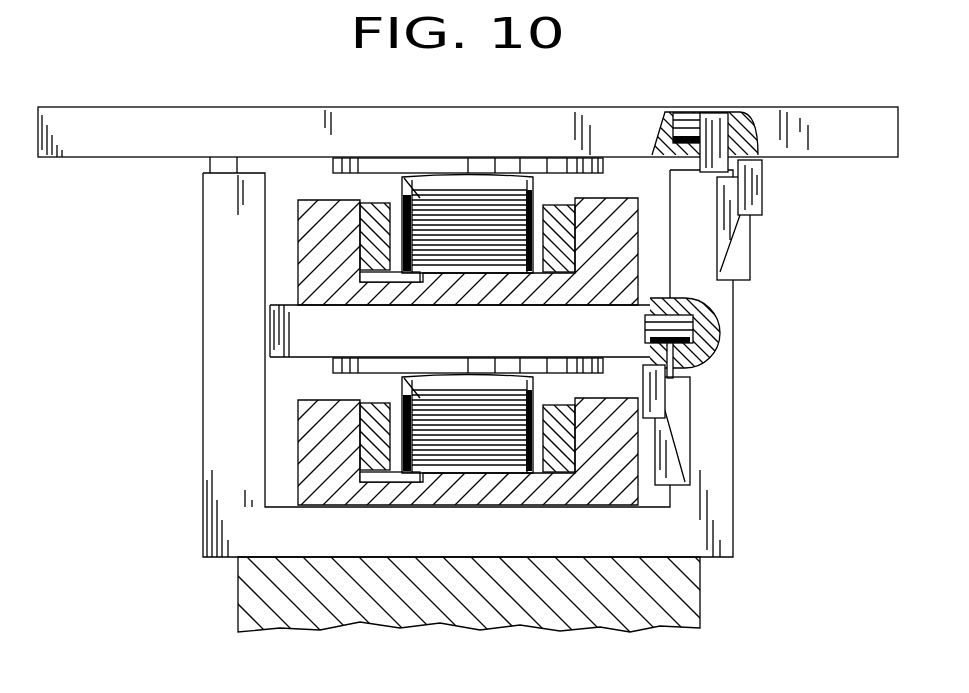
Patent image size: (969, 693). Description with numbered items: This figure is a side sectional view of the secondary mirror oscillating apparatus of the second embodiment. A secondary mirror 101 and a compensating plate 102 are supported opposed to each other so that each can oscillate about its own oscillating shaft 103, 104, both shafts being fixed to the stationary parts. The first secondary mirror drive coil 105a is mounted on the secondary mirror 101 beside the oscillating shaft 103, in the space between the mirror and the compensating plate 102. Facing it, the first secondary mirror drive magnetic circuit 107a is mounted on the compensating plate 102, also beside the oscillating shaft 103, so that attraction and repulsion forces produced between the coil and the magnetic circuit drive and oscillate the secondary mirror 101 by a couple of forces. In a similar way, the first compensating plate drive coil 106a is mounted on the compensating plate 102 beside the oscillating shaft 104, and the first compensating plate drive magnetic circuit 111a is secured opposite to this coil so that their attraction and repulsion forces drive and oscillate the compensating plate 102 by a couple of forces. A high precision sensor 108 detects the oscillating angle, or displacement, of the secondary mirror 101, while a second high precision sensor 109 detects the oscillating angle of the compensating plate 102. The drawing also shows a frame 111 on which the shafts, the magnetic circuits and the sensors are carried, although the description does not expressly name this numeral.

The secondary mirror 101 is at (208, 122).
The compensating plate 102 is at (283, 328).
The oscillating shaft 103 is at (688, 123).
The oscillating shaft 104 is at (687, 327).
The first secondary mirror drive coil 105a is at (408, 192).
The first compensating plate drive coil 106a is at (408, 392).
The first secondary mirror drive magnetic circuit 107a is at (310, 223).
The high precision sensor 108 is at (757, 187).
The high precision sensor 109 is at (658, 397).
The frame 111 is at (207, 513).
The first compensating plate drive magnetic circuit 111a is at (310, 458).